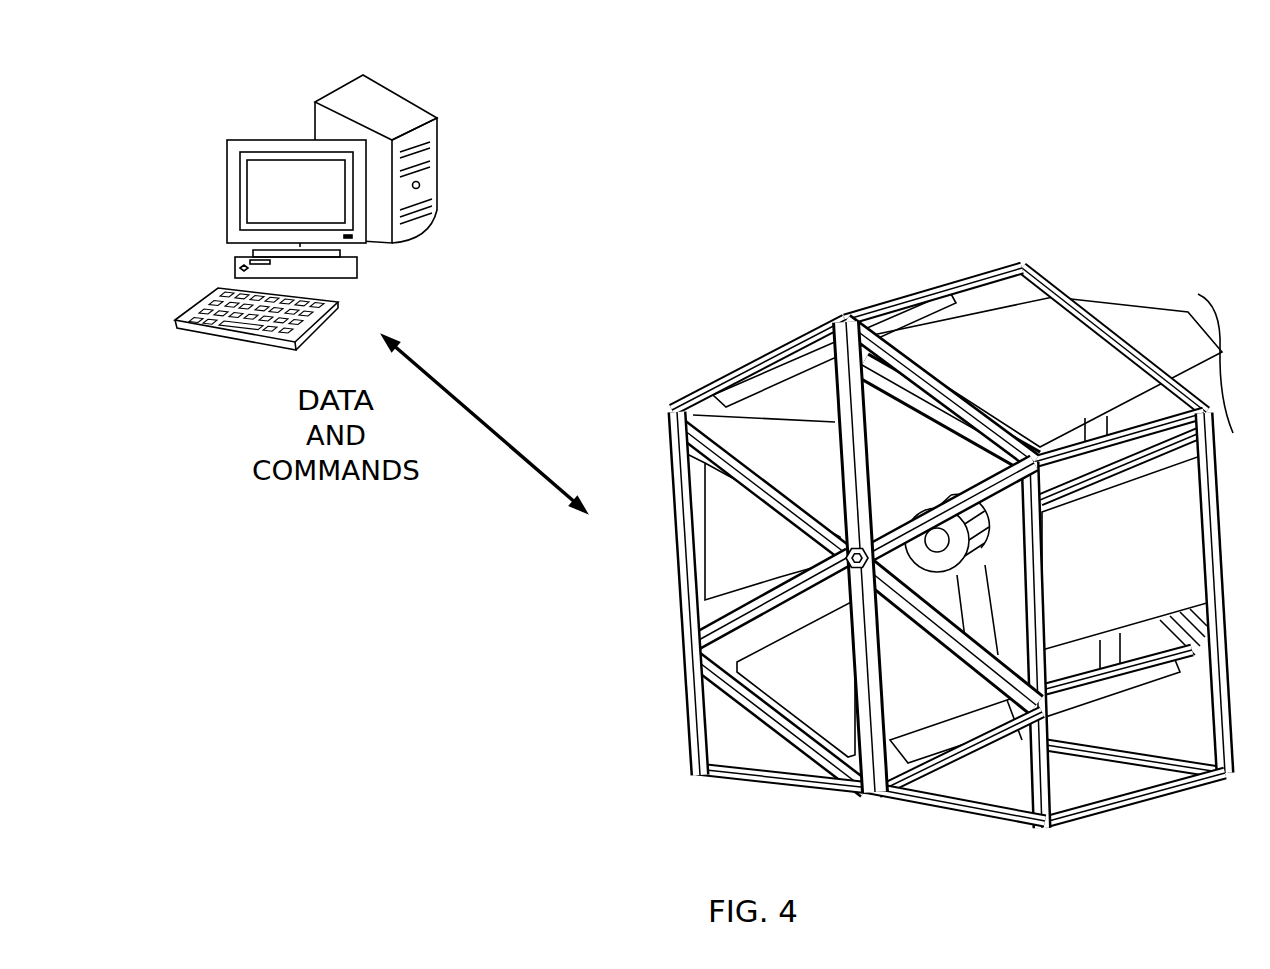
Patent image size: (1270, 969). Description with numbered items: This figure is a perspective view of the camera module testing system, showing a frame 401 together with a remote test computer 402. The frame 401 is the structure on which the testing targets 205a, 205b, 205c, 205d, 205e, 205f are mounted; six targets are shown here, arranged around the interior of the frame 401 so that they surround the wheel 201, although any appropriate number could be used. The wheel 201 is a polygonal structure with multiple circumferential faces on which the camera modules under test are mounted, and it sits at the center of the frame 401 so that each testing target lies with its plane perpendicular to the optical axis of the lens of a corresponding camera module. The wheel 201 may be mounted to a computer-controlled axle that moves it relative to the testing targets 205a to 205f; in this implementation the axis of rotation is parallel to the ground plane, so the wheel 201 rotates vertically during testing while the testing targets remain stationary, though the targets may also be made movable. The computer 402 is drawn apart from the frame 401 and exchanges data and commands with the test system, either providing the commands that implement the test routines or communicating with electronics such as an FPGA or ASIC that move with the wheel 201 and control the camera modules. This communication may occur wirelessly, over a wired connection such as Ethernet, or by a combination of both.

The computer 402 is at (288, 118).
The frame 401 is at (677, 407).
The wheel 201 is at (913, 510).
The testing target 205a is at (1058, 380).
The testing target 205b is at (1160, 572).
The testing target 205c is at (1007, 740).
The testing target 205d is at (849, 691).
The testing target 205e is at (784, 554).
The testing target 205f is at (937, 310).